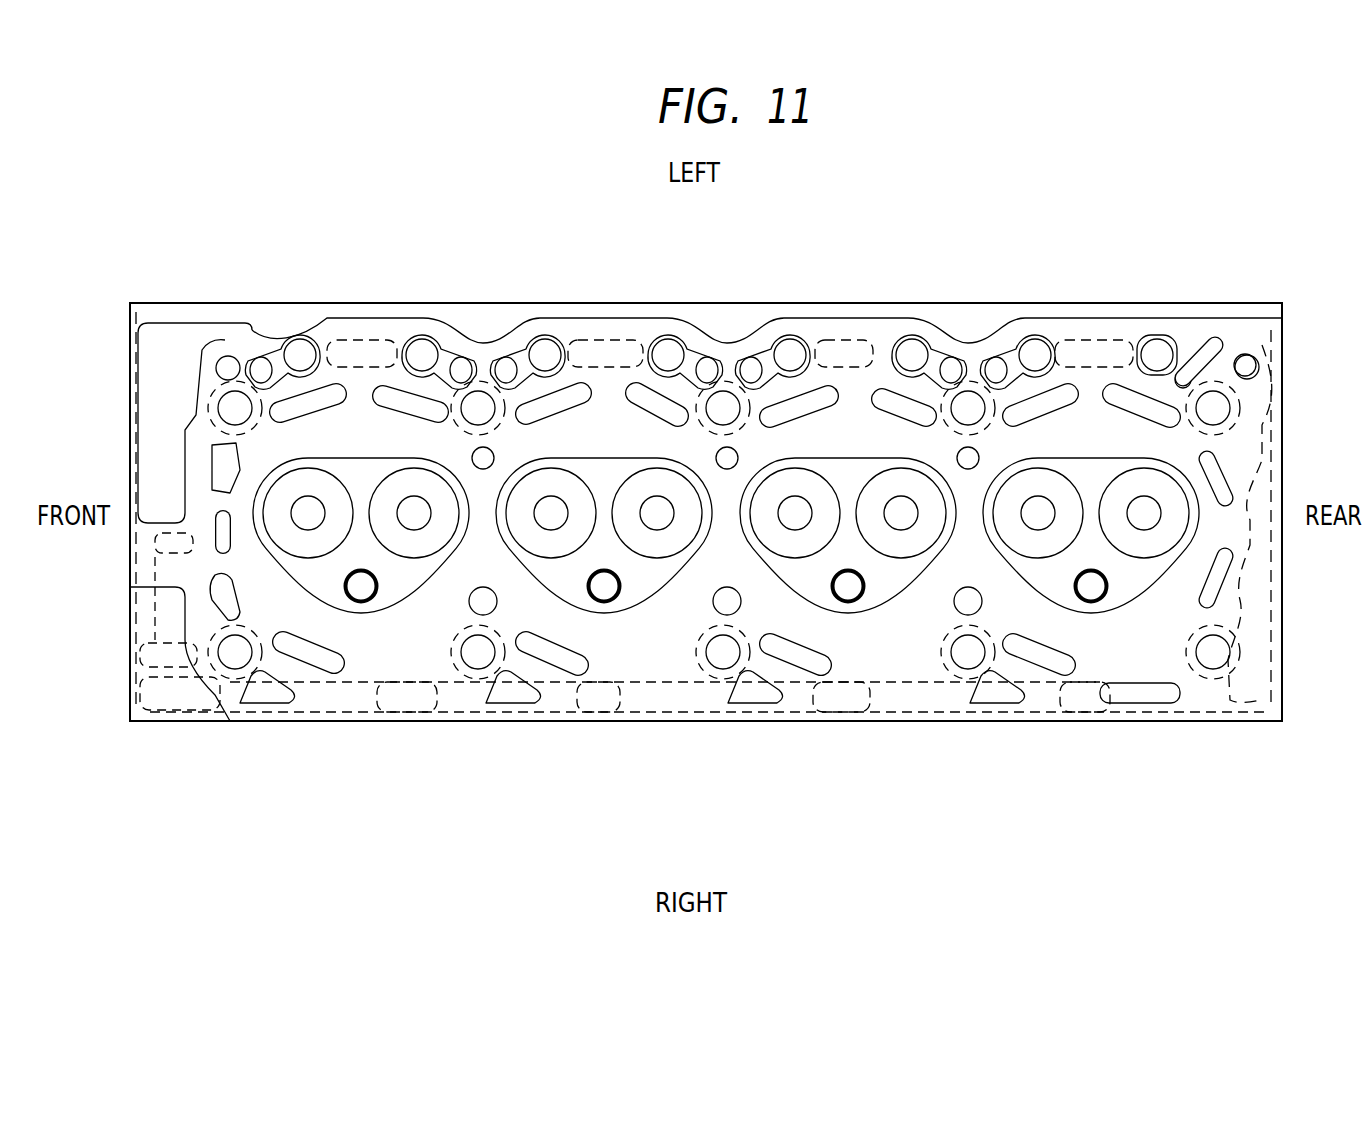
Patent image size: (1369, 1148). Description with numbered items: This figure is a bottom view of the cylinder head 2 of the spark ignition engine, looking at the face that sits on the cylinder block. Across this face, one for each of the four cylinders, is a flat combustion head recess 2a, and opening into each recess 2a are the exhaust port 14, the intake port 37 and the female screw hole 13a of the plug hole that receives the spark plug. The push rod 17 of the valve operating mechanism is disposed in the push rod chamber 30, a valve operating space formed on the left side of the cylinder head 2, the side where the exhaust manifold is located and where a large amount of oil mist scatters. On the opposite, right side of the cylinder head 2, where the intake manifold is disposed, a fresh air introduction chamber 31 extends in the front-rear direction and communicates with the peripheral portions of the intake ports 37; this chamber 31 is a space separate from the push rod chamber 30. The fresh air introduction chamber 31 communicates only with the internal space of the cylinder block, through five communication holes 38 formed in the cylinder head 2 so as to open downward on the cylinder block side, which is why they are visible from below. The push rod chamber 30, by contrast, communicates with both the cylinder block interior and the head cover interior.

The cylinder head 2 is at (1252, 278).
The combustion head recess 2a is at (398, 580).
The female screw hole 13a is at (372, 585).
The exhaust port 14 is at (402, 490).
The push rod 17 is at (327, 487).
The intake port 37 is at (815, 487).
The push rod chamber 30 is at (300, 340).
The fresh air introduction chamber 31 is at (195, 677).
The communication hole 38 is at (265, 692).